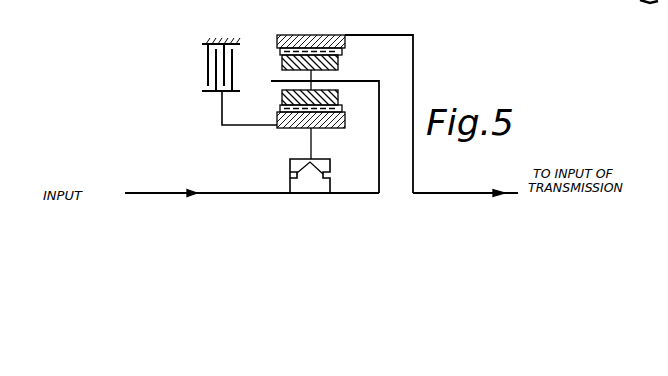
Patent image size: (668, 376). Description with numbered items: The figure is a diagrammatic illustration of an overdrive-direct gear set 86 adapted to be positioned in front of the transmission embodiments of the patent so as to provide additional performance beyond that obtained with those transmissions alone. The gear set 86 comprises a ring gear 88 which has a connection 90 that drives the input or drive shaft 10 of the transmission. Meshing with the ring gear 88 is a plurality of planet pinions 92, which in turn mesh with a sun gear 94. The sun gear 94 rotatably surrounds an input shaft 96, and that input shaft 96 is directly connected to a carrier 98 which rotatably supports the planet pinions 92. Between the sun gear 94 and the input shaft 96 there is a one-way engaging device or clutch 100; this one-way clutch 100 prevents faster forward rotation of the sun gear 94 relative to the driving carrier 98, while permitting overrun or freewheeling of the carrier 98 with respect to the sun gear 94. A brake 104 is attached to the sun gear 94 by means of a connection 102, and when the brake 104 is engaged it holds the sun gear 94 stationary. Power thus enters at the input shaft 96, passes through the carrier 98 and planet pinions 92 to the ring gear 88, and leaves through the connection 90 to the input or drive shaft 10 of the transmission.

The input or drive shaft 10 is at (432, 193).
The gear set 86 is at (308, 77).
The ring gear 88 is at (306, 35).
The connection 90 is at (413, 57).
The planet pinions 92 is at (322, 97).
The sun gear 94 is at (308, 122).
The input shaft 96 is at (175, 192).
The carrier 98 is at (379, 107).
The one-way engaging device or clutch 100 is at (283, 166).
The connection 102 is at (222, 106).
The brake 104 is at (208, 62).